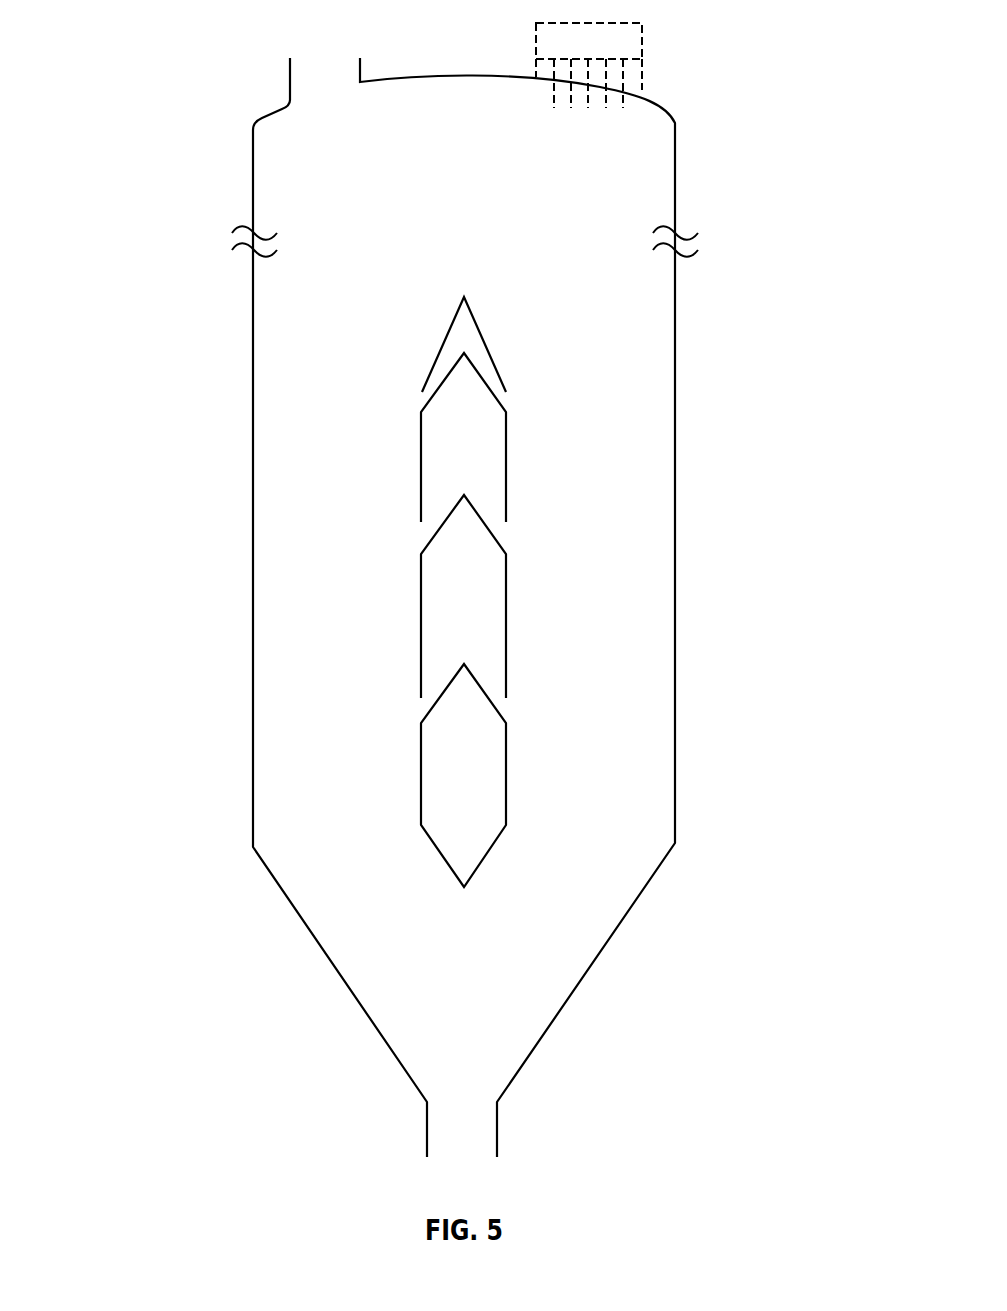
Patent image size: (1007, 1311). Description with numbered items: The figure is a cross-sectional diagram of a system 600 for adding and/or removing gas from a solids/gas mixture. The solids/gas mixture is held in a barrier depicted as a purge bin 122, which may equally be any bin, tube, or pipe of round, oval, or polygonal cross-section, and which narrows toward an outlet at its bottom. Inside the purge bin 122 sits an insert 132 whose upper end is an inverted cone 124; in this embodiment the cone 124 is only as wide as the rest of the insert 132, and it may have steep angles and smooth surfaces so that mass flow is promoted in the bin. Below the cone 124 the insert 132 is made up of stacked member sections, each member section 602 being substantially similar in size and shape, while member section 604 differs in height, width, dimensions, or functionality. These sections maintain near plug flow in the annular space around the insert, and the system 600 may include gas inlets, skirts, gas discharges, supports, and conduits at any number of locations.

The system 600 is at (222, 161).
The purge bin 122 is at (252, 525).
The insert 132 is at (481, 586).
The inverted cone 124 is at (445, 338).
The member section 602 is at (507, 447).
The member section 604 is at (507, 763).